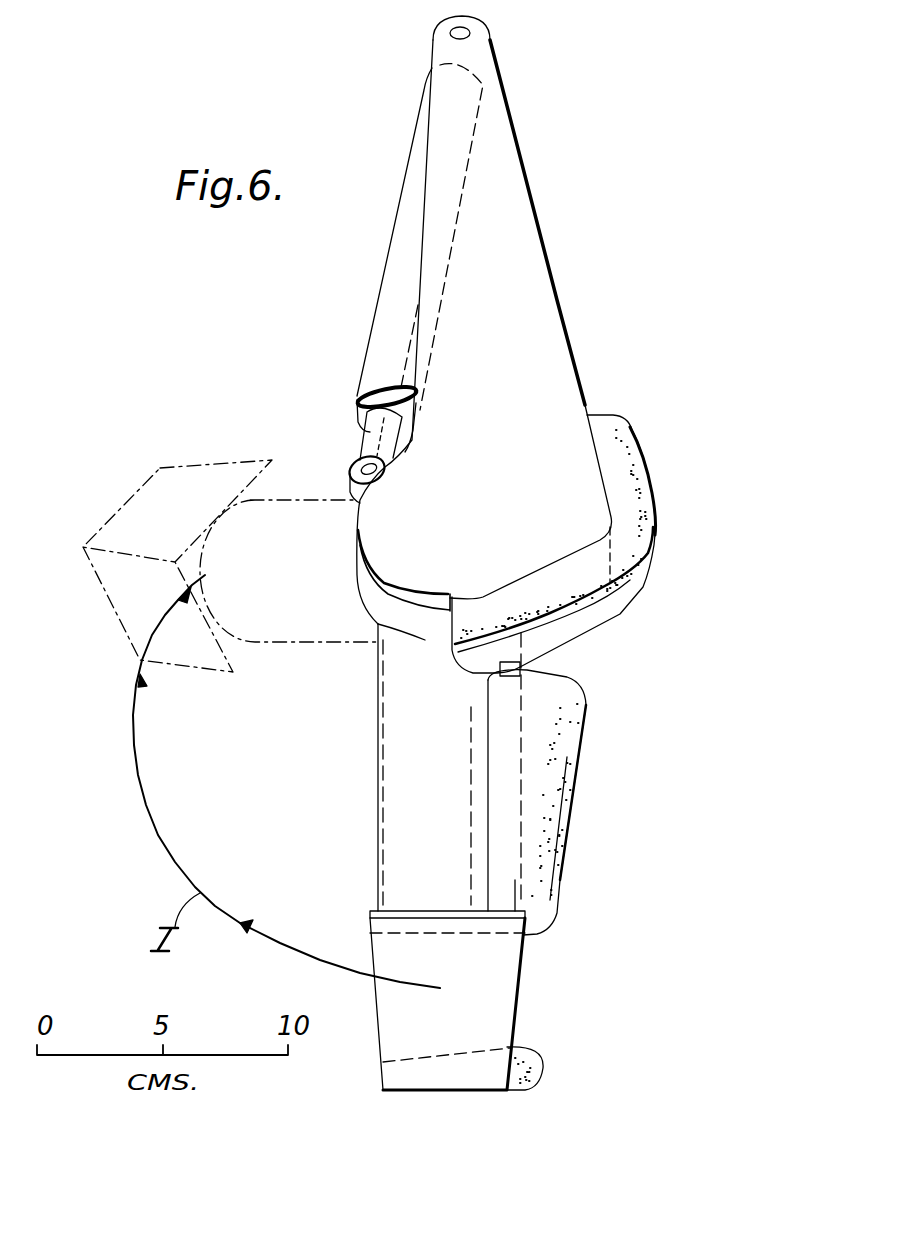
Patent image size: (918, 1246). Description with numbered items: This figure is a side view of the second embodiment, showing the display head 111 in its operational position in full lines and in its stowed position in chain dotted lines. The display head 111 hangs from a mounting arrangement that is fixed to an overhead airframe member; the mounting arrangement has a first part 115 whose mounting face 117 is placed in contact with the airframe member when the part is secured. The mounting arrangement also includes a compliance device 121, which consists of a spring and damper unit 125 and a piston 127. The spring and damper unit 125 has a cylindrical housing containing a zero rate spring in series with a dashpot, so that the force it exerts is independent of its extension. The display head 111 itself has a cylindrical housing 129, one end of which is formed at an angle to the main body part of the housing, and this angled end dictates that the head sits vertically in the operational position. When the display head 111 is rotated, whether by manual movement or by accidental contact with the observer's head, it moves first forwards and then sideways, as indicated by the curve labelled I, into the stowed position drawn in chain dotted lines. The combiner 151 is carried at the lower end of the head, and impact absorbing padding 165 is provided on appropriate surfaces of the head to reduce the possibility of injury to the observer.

The display head 111 is at (377, 845).
The first part 115 is at (580, 380).
The mounting face 117 is at (535, 397).
The compliance device 121 is at (364, 353).
The spring and damper unit 125 is at (383, 266).
The piston 127 is at (368, 440).
The cylindrical housing 129 is at (377, 733).
The combiner 151 is at (490, 1008).
The impact absorbing padding 165 is at (575, 682).